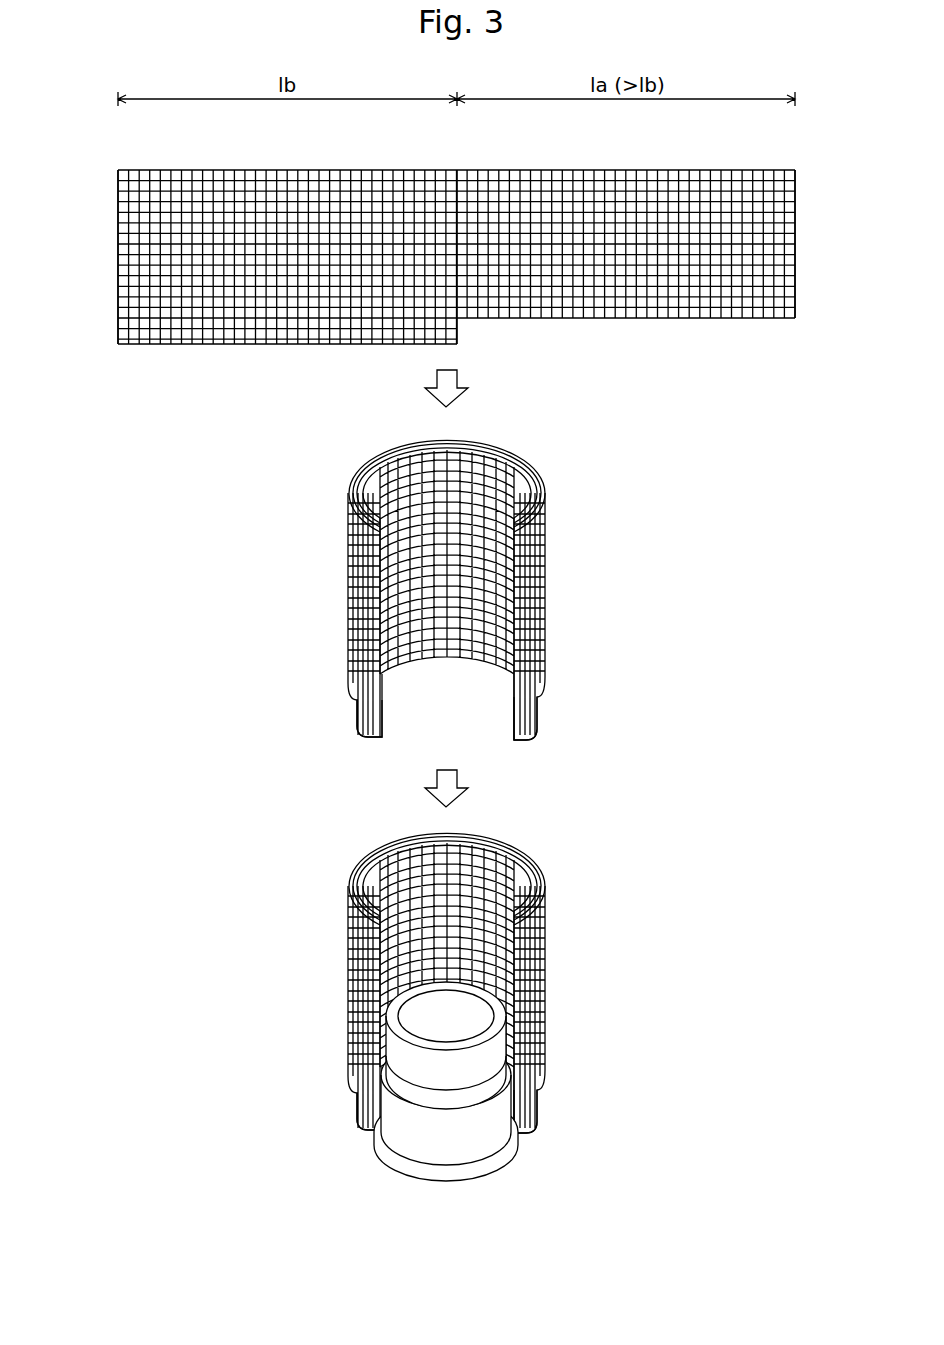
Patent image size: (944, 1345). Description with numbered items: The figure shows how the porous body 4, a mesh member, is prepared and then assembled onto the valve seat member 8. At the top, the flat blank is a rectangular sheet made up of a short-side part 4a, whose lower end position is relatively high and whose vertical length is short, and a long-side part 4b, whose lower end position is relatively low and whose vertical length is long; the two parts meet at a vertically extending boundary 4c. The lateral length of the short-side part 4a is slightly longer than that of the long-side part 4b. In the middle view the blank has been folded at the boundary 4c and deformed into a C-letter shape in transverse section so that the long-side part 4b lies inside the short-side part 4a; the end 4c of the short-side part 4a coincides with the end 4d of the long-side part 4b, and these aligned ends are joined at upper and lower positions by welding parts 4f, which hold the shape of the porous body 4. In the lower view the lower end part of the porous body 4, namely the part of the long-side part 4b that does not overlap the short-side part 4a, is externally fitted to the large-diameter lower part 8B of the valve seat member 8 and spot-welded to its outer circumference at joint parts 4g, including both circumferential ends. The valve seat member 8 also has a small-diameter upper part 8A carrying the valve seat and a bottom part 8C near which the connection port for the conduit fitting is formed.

The porous body 4 is at (455, 660).
The short-side part 4a is at (582, 170).
The long-side part 4b is at (297, 170).
The boundary / end of short-side part 4c is at (480, 170).
The end of long-side part 4d is at (118, 200).
The welding parts 4f is at (348, 538).
The joint parts 4g is at (357, 1105).
The valve seat member 8 is at (475, 1112).
The small-diameter upper part 8A is at (438, 1073).
The large-diameter lower part 8B is at (470, 1137).
The bottom part 8C is at (513, 1163).